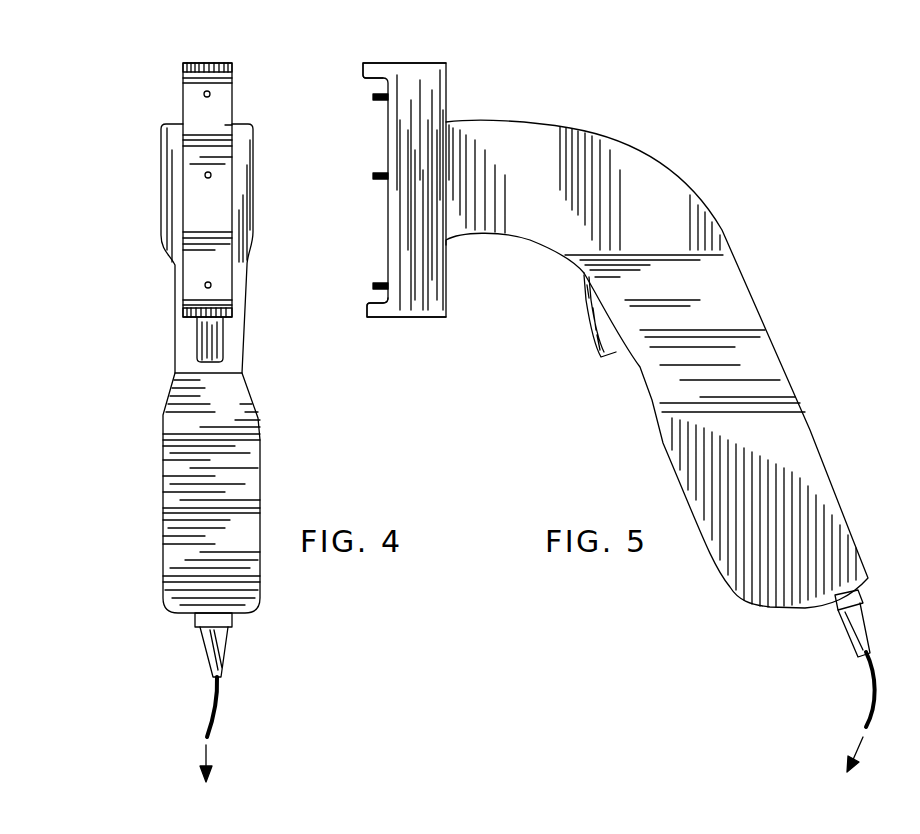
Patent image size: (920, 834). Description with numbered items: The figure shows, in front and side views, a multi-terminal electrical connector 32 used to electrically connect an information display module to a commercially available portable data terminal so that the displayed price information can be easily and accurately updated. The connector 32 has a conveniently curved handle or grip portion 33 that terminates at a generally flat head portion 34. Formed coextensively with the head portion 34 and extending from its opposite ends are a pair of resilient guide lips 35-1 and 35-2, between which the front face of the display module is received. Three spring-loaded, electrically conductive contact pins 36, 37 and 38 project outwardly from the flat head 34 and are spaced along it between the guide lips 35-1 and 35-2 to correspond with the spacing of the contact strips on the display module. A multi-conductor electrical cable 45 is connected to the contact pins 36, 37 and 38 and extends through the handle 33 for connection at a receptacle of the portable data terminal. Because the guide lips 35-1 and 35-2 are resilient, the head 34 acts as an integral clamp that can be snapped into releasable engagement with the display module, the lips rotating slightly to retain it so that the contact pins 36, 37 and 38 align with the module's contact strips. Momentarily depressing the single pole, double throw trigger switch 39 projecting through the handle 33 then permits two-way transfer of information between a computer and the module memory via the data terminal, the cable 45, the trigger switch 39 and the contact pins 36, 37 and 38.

In FIG. 4, the multi-terminal electrical connector 32 is at (130, 376).
In FIG. 5, the multi-terminal electrical connector 32 is at (758, 249).
In FIG. 4, the handle portion 33 is at (163, 444).
In FIG. 5, the handle portion 33 is at (660, 162).
In FIG. 4, the head portion 34 is at (183, 218).
In FIG. 5, the head portion 34 is at (388, 230).
In FIG. 4, the guide lip 35-1 is at (197, 63).
In FIG. 5, the guide lip 35-1 is at (383, 63).
In FIG. 4, the guide lip 35-2 is at (185, 318).
In FIG. 5, the guide lip 35-2 is at (386, 317).
In FIG. 4, the contact pin 36 is at (205, 96).
In FIG. 5, the contact pin 36 is at (373, 97).
In FIG. 4, the contact pin 37 is at (206, 177).
In FIG. 5, the contact pin 37 is at (373, 176).
In FIG. 4, the contact pin 38 is at (206, 286).
In FIG. 5, the contact pin 38 is at (373, 286).
In FIG. 4, the trigger switch 39 is at (210, 363).
In FIG. 5, the trigger switch 39 is at (597, 318).
In FIG. 4, the multi-conductor electrical cable 45 is at (210, 707).
In FIG. 5, the multi-conductor electrical cable 45 is at (864, 698).